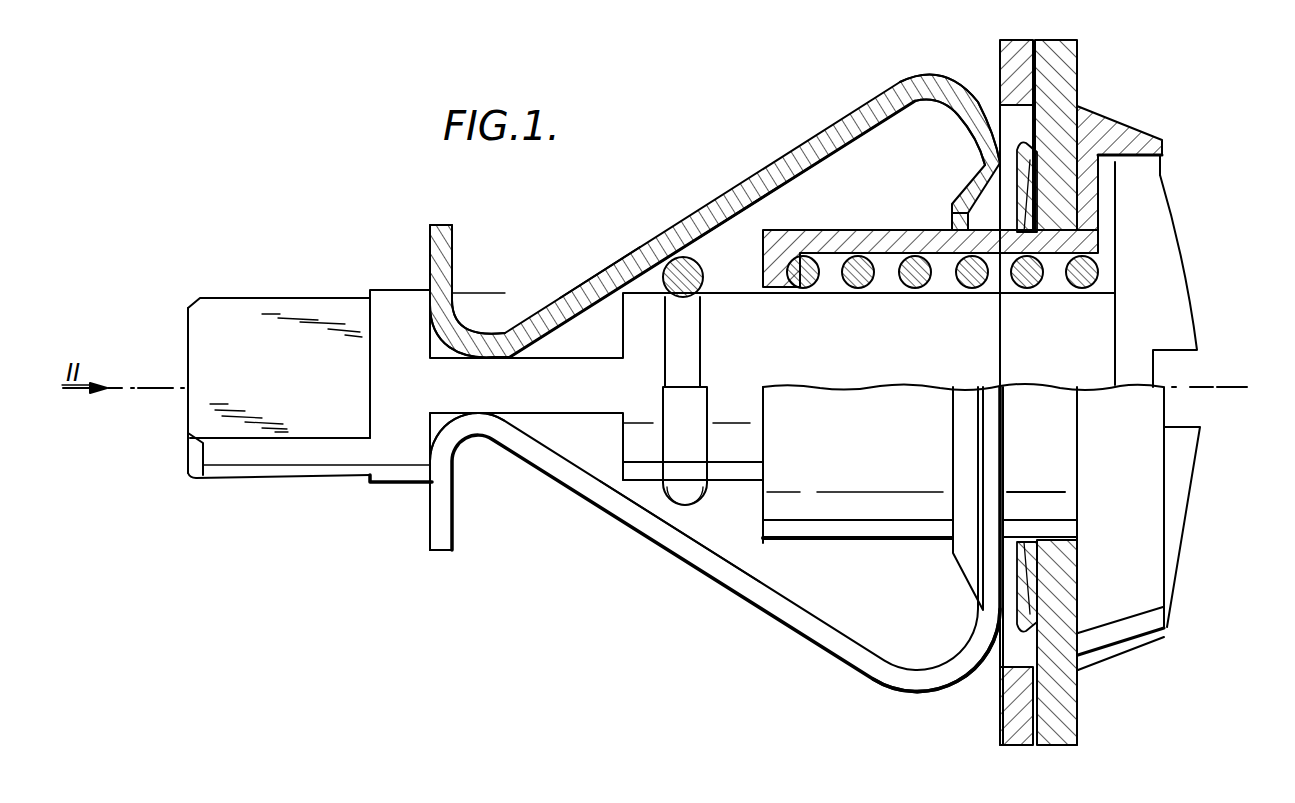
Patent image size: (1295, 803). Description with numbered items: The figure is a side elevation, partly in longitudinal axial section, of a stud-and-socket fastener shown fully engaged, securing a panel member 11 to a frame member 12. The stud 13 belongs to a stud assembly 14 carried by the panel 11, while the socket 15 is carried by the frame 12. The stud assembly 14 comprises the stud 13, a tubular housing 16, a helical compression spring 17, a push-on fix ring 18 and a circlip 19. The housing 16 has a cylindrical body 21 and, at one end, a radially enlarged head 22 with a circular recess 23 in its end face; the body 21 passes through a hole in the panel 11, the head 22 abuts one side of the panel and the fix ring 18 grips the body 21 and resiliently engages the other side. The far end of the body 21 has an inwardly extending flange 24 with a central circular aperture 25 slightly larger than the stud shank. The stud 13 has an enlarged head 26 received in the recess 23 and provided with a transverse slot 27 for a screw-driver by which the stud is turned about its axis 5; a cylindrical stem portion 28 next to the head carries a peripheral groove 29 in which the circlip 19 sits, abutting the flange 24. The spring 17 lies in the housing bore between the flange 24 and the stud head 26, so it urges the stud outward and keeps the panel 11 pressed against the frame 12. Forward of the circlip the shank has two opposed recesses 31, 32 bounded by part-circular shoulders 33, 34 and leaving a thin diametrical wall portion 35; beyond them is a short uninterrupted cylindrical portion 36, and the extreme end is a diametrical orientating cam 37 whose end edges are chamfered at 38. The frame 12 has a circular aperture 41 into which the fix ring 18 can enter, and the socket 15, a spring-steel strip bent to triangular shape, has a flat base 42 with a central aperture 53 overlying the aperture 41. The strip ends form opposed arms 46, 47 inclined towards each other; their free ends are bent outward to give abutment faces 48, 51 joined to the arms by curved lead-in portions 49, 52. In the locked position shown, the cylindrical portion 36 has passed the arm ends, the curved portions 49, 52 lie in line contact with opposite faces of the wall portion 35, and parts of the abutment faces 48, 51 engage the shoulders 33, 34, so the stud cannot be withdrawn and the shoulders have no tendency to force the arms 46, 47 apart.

The stud axis 5 is at (150, 388).
The panel member 11 is at (1062, 718).
The frame member 12 is at (1015, 718).
The stud 13 is at (808, 322).
The stud assembly 14 is at (1138, 97).
The socket 15 is at (806, 126).
The tubular housing 16 is at (1052, 456).
The helical compression spring 17 is at (918, 262).
The push-on fix ring 18 is at (1038, 150).
The circlip 19 is at (700, 266).
The cylindrical body 21 is at (797, 530).
The head of housing 22 is at (1147, 532).
The circular recess 23 is at (1103, 197).
The inwardly extending flange 24 is at (780, 253).
The central circular aperture 25 is at (777, 273).
The head of stud 26 is at (1137, 263).
The transverse slot 27 is at (1175, 383).
The stem portion 28 is at (890, 373).
The peripheral groove 29 is at (680, 330).
The recess 31 is at (602, 443).
The recess 32 is at (593, 337).
The shoulder 33 is at (467, 437).
The shoulder 34 is at (466, 322).
The diametrical wall portion 35 is at (535, 402).
The cylindrical portion 36 is at (390, 317).
The orientating cam 37 is at (238, 323).
The chamfer 38 is at (192, 470).
The circular aperture 41 is at (1003, 673).
The base 42 is at (1002, 558).
The arm 46 is at (682, 543).
The arm 47 is at (593, 275).
The abutment face 48 is at (430, 503).
The curved lead-in portion 49 is at (477, 433).
The abutment face 51 is at (430, 250).
The curved lead-in portion 52 is at (470, 333).
The central aperture 53 is at (947, 217).